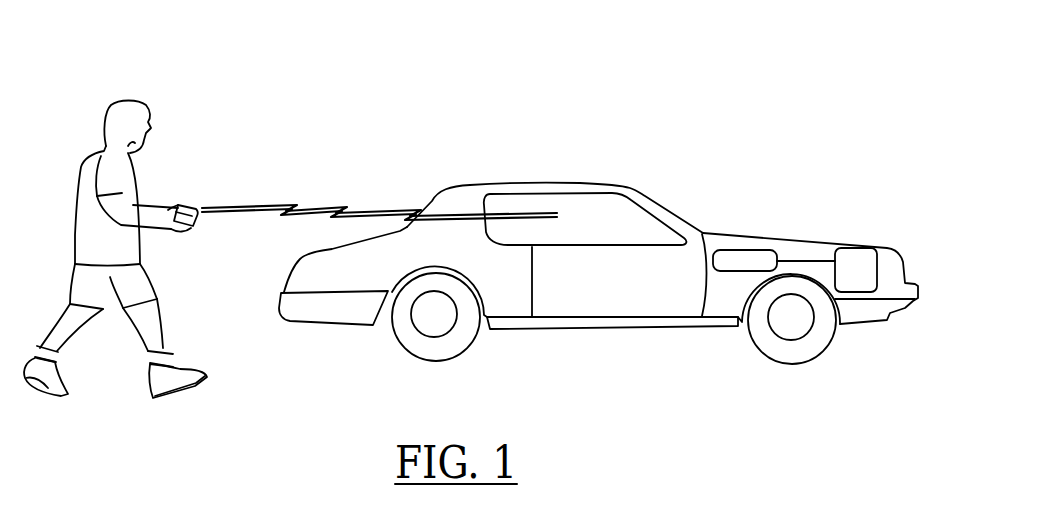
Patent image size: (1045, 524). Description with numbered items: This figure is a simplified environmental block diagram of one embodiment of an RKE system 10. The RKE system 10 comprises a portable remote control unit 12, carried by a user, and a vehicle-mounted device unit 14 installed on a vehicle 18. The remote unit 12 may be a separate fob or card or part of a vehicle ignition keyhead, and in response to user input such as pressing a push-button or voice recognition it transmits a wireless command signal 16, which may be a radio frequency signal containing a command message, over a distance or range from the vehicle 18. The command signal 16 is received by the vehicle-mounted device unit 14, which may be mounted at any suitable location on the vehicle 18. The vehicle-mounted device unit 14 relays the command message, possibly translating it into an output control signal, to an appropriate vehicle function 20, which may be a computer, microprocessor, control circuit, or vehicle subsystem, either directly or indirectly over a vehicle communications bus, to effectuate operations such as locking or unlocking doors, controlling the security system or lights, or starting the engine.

The RKE system 10 is at (740, 131).
The portable remote control unit 12 is at (187, 205).
The vehicle-mounted device unit 14 is at (750, 250).
The wireless command signal 16 is at (379, 193).
The vehicle 18 is at (621, 188).
The vehicle function 20 is at (860, 252).